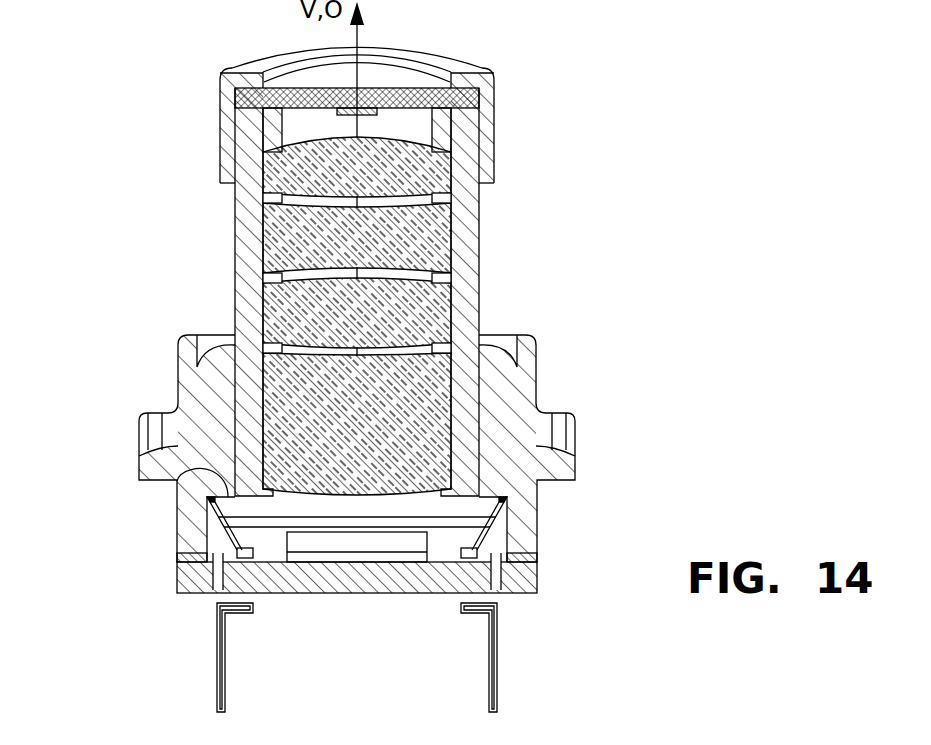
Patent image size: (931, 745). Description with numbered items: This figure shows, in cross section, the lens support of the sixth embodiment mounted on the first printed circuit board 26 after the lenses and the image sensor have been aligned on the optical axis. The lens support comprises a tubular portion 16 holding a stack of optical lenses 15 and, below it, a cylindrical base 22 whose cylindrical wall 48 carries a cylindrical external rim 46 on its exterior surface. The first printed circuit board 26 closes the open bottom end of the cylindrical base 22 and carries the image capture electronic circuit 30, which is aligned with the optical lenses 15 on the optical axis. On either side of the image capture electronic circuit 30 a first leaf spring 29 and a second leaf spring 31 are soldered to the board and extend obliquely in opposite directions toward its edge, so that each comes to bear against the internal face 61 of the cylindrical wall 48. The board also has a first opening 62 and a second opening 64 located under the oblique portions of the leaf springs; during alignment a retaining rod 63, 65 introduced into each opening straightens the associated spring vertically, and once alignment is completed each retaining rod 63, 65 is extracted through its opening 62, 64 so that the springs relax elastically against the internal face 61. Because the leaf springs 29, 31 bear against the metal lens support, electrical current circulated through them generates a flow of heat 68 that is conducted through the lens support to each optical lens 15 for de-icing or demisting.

The optical lenses 15 is at (382, 192).
The tubular portion 16 is at (232, 305).
The cylindrical base 22 is at (487, 408).
The first printed circuit board 26 is at (544, 568).
The first leaf spring 29 is at (213, 529).
The image capture electronic circuit 30 is at (380, 540).
The second leaf spring 31 is at (507, 530).
The cylindrical external rim 46 is at (570, 456).
The cylindrical wall 48 is at (141, 389).
The internal face 61 is at (222, 490).
The first opening 62 is at (208, 602).
The retaining rod 63 is at (214, 680).
The second opening 64 is at (507, 600).
The retaining rod 65 is at (502, 680).
The flow of heat 68 is at (247, 232).